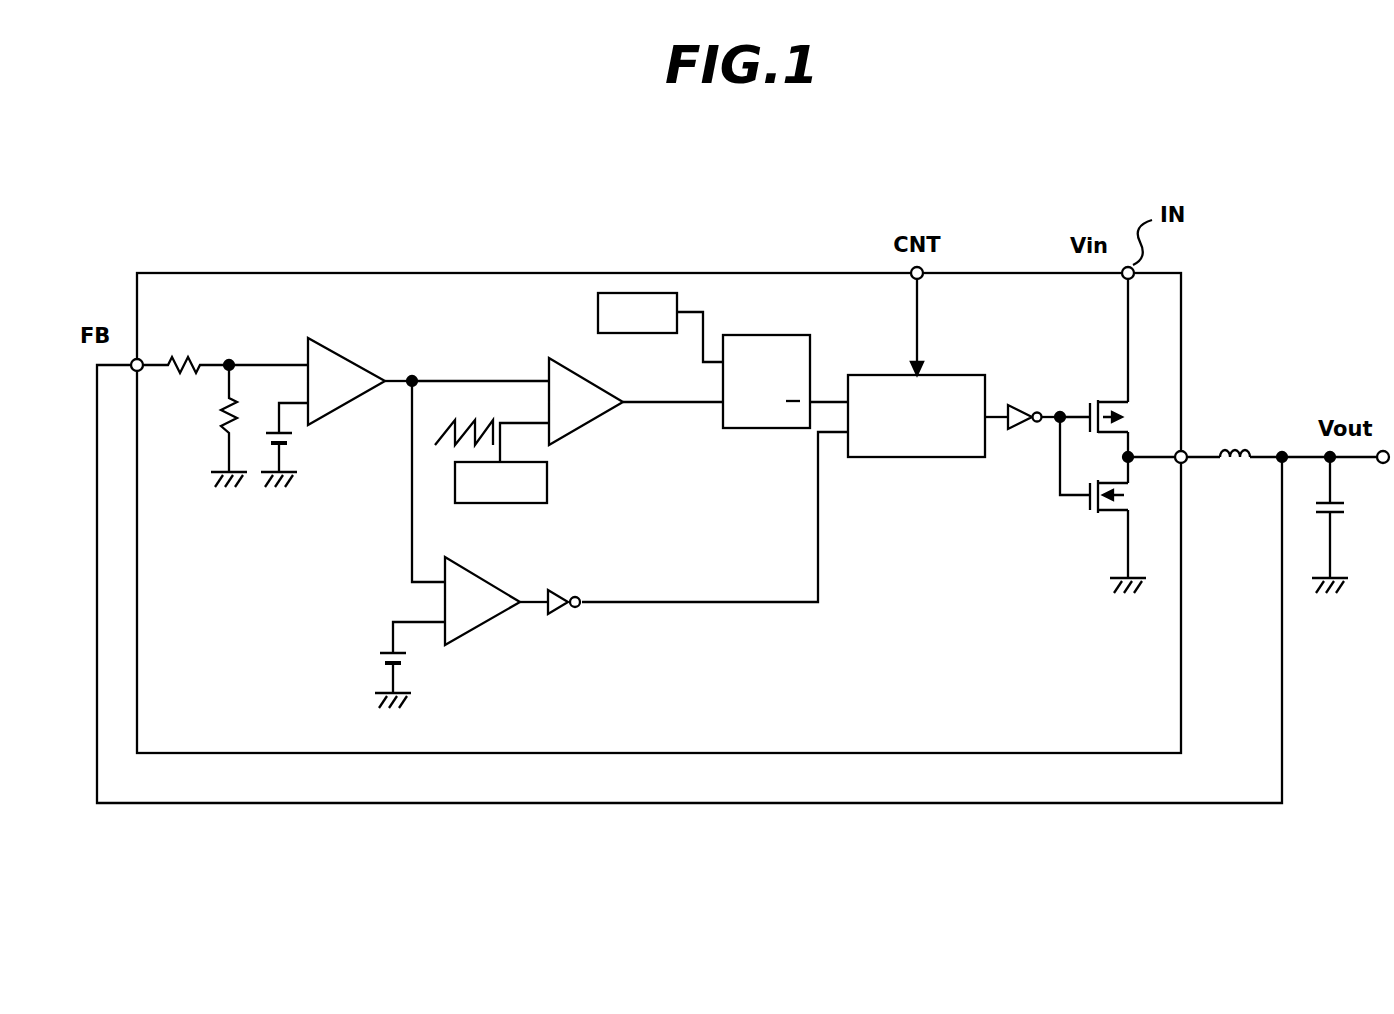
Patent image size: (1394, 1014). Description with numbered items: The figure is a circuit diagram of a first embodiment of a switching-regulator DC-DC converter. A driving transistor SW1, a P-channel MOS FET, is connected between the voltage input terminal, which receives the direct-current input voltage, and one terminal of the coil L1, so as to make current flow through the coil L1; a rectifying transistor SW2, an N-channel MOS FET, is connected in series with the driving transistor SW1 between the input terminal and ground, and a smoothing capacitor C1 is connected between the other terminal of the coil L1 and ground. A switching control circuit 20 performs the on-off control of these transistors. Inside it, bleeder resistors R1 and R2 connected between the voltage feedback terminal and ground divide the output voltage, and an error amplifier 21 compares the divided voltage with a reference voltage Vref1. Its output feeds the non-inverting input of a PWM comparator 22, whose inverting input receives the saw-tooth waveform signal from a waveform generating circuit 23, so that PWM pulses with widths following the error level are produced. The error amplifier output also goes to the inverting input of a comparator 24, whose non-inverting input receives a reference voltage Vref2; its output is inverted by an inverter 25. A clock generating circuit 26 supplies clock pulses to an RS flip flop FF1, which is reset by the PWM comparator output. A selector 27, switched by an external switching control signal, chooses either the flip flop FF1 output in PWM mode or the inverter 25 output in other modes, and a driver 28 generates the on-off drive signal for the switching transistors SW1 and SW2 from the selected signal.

The switching control circuit 20 is at (752, 273).
The error amplifier 21 is at (352, 340).
The PWM comparator 22 is at (592, 420).
The waveform generating circuit 23 is at (530, 503).
The comparator 24 is at (475, 630).
The inverter 25 is at (565, 605).
The clock generating circuit 26 is at (597, 305).
The selector 27 is at (912, 457).
The driver 28 is at (1022, 405).
The bleeder resistor R1 is at (186, 347).
The bleeder resistor R2 is at (215, 426).
The reference voltage Vref1 is at (313, 445).
The reference voltage Vref2 is at (377, 665).
The RS flip flop FF1 is at (755, 428).
The driving transistor SW1 is at (1095, 356).
The rectifying transistor SW2 is at (1104, 512).
The coil L1 is at (1234, 429).
The smoothing capacitor C1 is at (1348, 525).